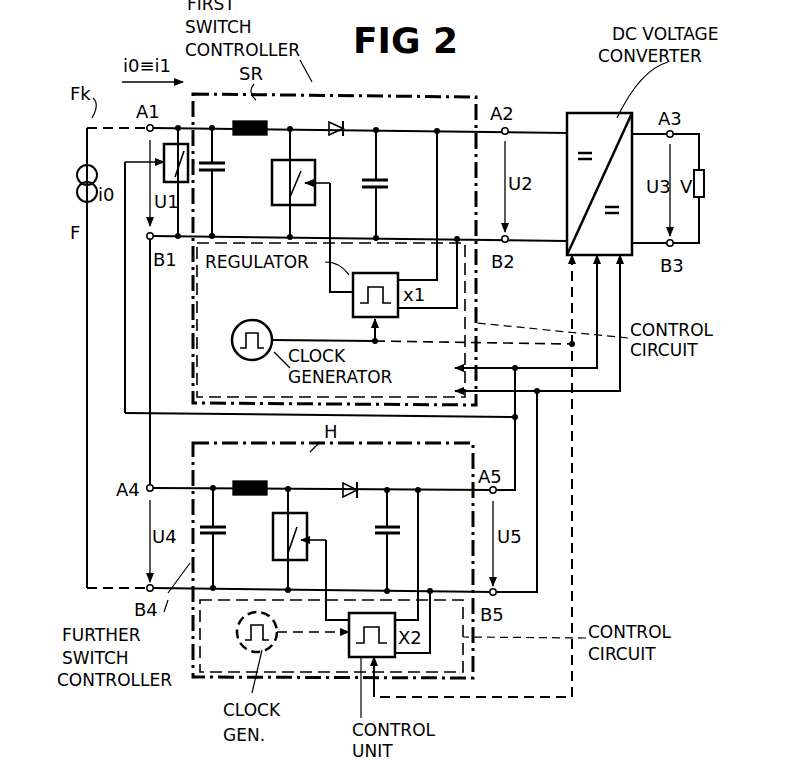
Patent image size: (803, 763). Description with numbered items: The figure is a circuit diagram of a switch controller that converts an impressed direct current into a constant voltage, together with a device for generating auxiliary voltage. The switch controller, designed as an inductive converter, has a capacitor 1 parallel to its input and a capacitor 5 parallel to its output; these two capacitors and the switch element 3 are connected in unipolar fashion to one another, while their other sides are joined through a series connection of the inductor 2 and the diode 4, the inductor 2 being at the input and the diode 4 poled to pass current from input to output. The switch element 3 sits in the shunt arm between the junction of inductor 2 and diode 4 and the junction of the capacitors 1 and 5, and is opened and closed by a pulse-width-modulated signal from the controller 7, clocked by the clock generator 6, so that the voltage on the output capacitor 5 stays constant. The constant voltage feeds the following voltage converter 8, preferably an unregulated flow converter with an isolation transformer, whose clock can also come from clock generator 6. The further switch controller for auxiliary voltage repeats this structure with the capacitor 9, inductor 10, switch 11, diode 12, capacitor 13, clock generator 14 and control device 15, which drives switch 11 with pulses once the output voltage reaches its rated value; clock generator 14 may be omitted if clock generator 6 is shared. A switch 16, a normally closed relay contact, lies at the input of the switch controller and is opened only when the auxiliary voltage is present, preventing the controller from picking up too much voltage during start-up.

The capacitor 1 is at (212, 182).
The inductor 2 is at (242, 135).
The switch element 3 is at (306, 160).
The diode 4 is at (338, 120).
The capacitor 5 is at (381, 184).
The clock generator 6 is at (258, 320).
The controller 7 is at (382, 273).
The voltage converter 8 is at (598, 113).
The capacitor 9 is at (213, 538).
The inductor 10 is at (247, 481).
The switch 11 is at (296, 513).
The diode 12 is at (352, 483).
The capacitor 13 is at (380, 540).
The clock generator 14 is at (272, 624).
The control device 15 is at (380, 613).
The switch 16 is at (166, 144).